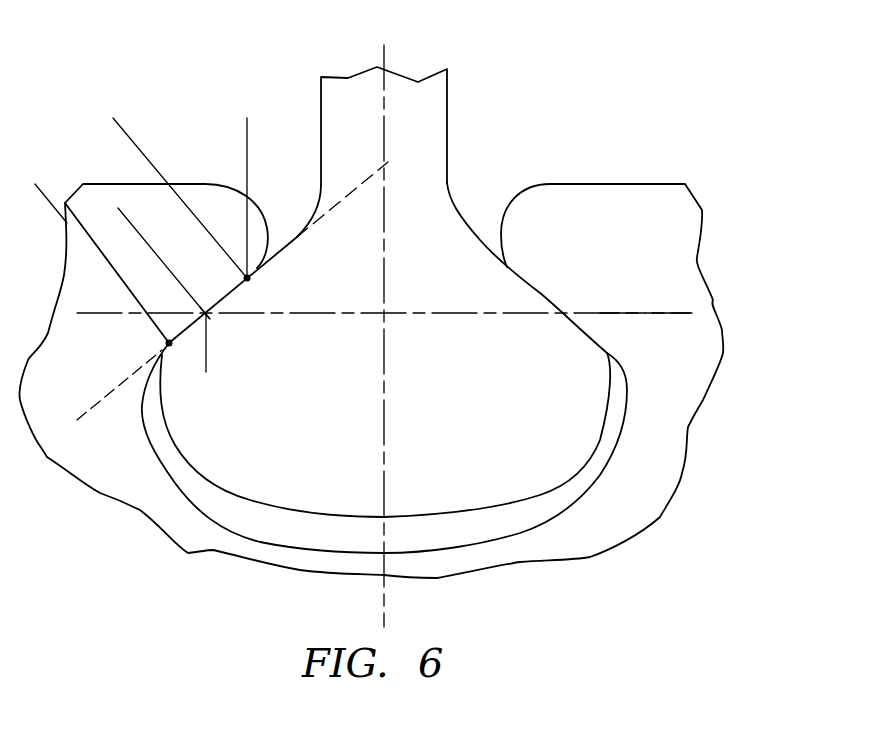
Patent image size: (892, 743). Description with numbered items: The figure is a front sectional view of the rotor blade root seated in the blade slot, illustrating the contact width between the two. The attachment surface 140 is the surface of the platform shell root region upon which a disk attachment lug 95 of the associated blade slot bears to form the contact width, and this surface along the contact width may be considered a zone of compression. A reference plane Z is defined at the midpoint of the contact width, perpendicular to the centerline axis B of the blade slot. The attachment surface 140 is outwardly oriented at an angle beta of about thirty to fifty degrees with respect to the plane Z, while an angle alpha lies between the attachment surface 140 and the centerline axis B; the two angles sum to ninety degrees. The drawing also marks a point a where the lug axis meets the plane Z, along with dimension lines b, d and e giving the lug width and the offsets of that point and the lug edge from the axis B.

The attachment surface 140 is at (156, 106).
The disk attachment lug 95 is at (211, 210).
The centerline axis of the blade slot B is at (387, 617).
The reference plane Z is at (668, 312).
The intersection point a is at (204, 308).
The pocket width b is at (118, 127).
The distance d is at (206, 364).
The distance e is at (384, 127).